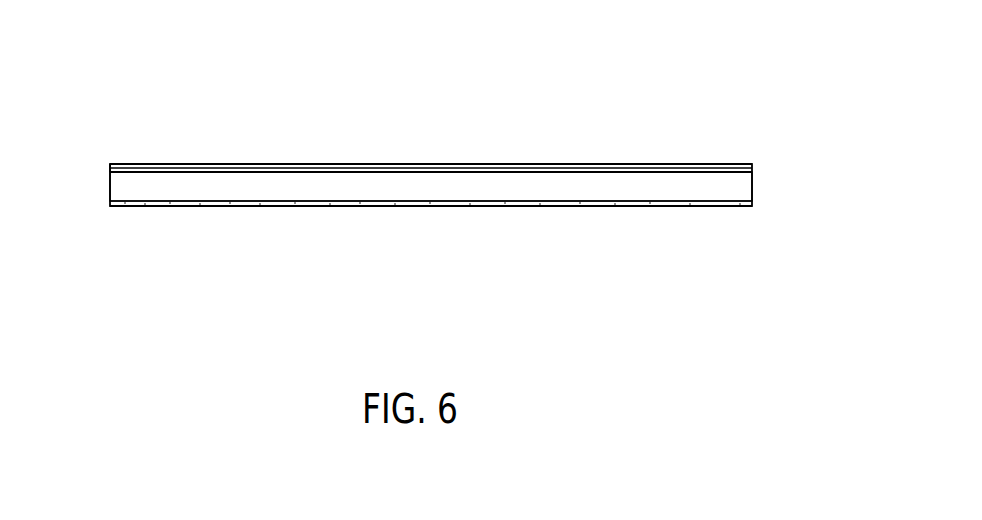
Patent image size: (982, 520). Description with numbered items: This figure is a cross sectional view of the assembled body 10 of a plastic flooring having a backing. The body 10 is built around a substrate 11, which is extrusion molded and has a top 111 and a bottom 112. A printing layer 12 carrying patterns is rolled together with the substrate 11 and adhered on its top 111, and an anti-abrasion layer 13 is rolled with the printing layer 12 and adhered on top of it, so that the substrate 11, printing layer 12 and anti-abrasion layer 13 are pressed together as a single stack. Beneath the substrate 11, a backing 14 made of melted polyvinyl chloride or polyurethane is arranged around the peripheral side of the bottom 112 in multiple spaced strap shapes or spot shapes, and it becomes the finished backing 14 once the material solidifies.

The body 10 is at (782, 105).
The substrate 11 is at (117, 187).
The top 111 is at (414, 172).
The bottom 112 is at (409, 201).
The printing layer 12 is at (109, 171).
The anti-abrasion layer 13 is at (180, 167).
The backing 14 is at (148, 217).